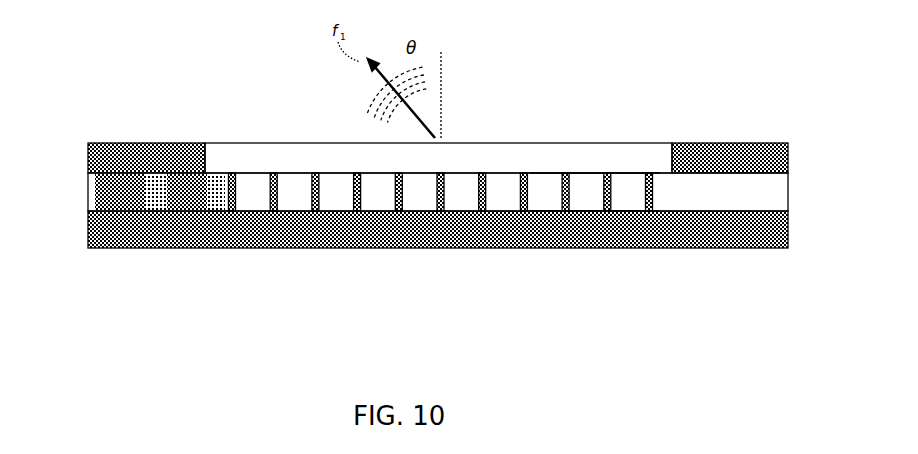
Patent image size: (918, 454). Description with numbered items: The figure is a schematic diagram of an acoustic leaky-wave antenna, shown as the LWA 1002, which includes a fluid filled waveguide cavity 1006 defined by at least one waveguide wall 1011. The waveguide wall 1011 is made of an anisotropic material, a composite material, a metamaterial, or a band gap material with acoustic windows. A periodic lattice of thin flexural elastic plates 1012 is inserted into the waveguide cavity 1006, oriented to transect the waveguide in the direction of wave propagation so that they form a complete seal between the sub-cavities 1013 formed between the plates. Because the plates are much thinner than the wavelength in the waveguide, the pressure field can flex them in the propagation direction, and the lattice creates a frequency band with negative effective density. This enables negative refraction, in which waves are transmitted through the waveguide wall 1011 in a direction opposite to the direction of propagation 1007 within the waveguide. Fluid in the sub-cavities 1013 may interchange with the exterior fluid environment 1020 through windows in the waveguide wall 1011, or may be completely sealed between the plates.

The LWA 1002 is at (213, 270).
The waveguide cavity 1006 is at (768, 193).
The direction of propagation 1007 is at (84, 187).
The waveguide wall 1011 is at (438, 158).
The flexural elastic plates 1012 is at (315, 193).
The sub-cavities 1013 is at (625, 185).
The exterior fluid environment 1020 is at (438, 111).